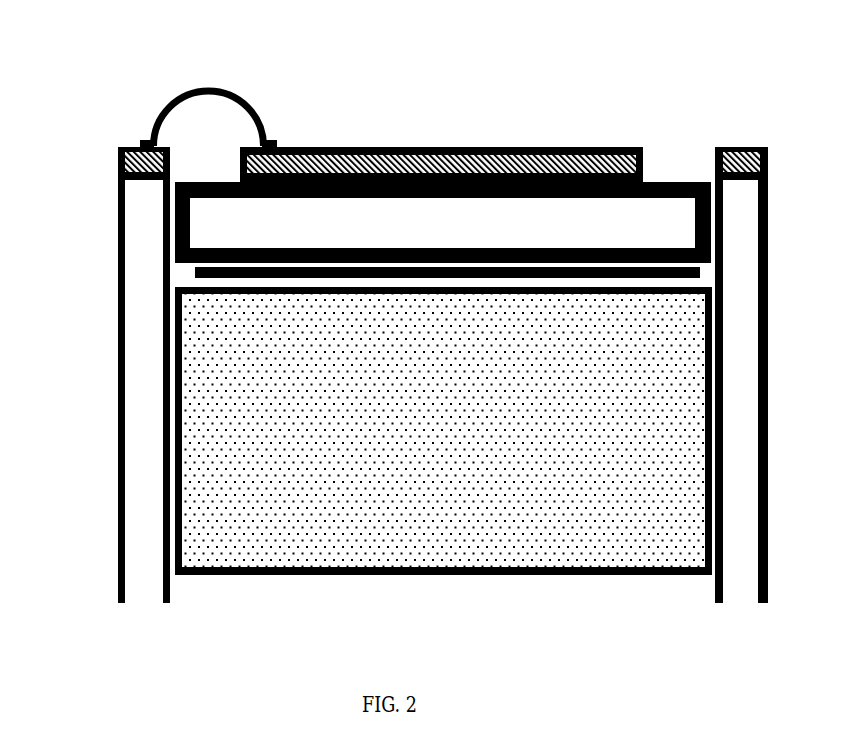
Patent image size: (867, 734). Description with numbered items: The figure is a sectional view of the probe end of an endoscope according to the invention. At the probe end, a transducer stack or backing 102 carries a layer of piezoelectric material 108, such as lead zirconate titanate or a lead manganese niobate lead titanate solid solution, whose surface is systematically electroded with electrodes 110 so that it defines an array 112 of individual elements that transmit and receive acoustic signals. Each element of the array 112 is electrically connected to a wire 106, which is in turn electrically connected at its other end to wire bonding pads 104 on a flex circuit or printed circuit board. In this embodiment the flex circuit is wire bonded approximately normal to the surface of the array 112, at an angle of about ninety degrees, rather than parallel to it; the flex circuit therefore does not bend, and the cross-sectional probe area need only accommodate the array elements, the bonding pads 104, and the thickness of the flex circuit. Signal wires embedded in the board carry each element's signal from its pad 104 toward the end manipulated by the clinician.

The transducer stack, backing 102 is at (437, 550).
The wire bonding pads 104 is at (140, 132).
The wire to/from array element 106 is at (190, 83).
The piezoelectric material 108 is at (471, 243).
The electrodes 110 is at (195, 272).
The array, ultrasonic array 112 is at (488, 150).